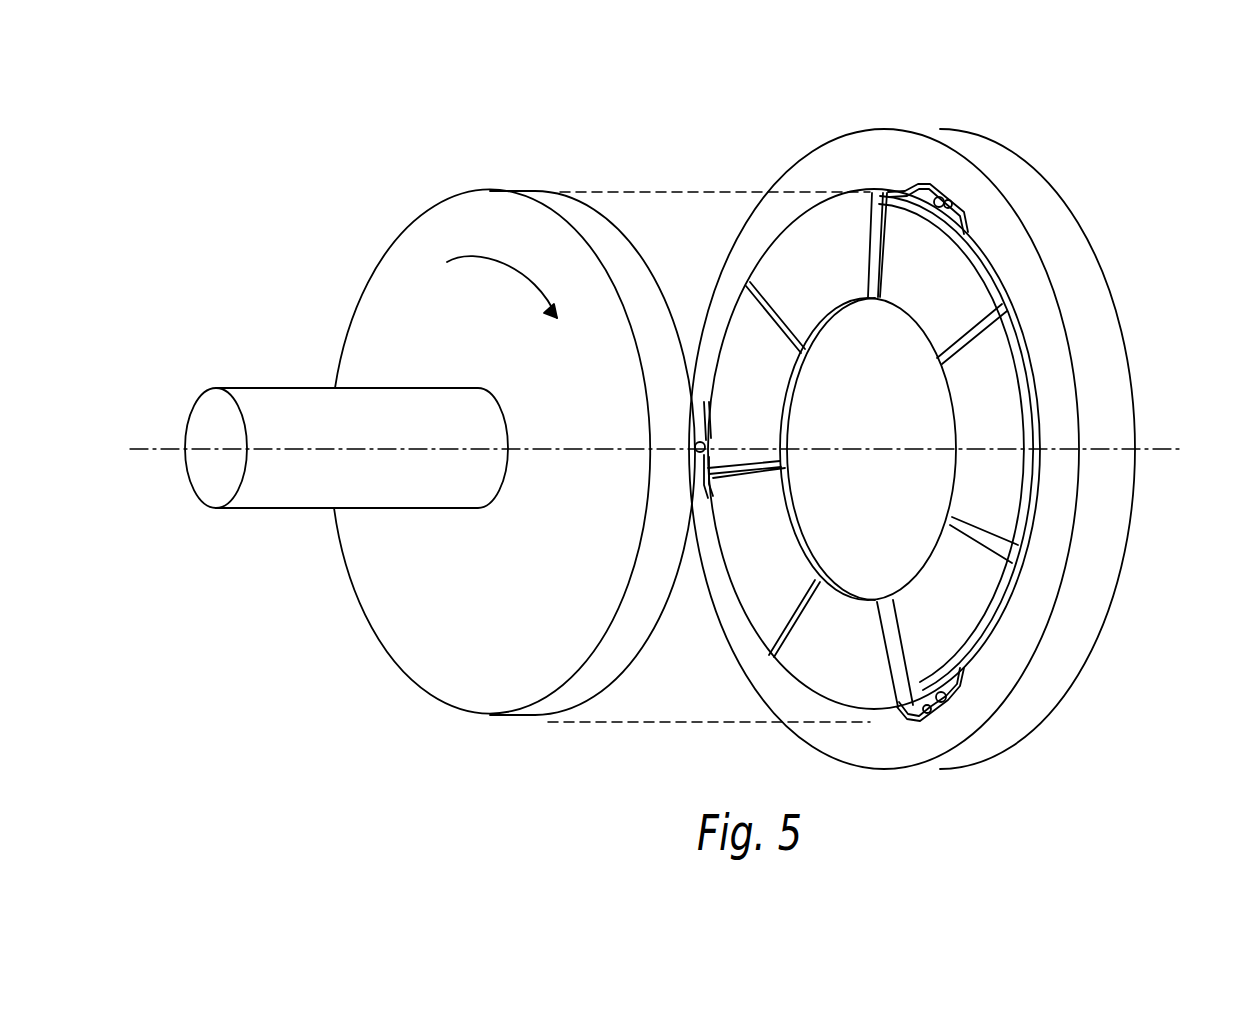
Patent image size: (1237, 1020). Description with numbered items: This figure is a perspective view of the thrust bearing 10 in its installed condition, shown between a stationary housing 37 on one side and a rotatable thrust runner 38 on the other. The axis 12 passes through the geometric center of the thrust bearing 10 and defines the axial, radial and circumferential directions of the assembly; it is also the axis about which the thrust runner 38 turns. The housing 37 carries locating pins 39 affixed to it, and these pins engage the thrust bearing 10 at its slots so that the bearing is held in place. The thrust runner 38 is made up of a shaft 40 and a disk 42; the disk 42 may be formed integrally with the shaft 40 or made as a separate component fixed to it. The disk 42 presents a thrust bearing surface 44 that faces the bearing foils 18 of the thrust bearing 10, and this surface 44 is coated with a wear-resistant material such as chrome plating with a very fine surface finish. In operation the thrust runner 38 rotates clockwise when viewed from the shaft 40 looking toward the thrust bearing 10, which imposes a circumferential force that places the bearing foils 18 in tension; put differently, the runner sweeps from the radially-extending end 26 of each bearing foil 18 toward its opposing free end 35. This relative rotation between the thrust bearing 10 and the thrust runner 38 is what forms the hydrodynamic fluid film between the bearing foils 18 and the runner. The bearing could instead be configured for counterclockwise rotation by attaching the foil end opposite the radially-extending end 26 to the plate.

The thrust bearing 10 is at (943, 419).
The axis 12 is at (1173, 449).
The bearing foils 18 is at (863, 450).
The radially-extending end 26 is at (887, 192).
The free end 35 is at (987, 283).
The housing 37 is at (890, 148).
The thrust runner 38 is at (514, 388).
The locating pins 39 is at (700, 437).
The shaft 40 is at (278, 388).
The disk 42 is at (493, 191).
The thrust bearing surface 44 is at (618, 222).